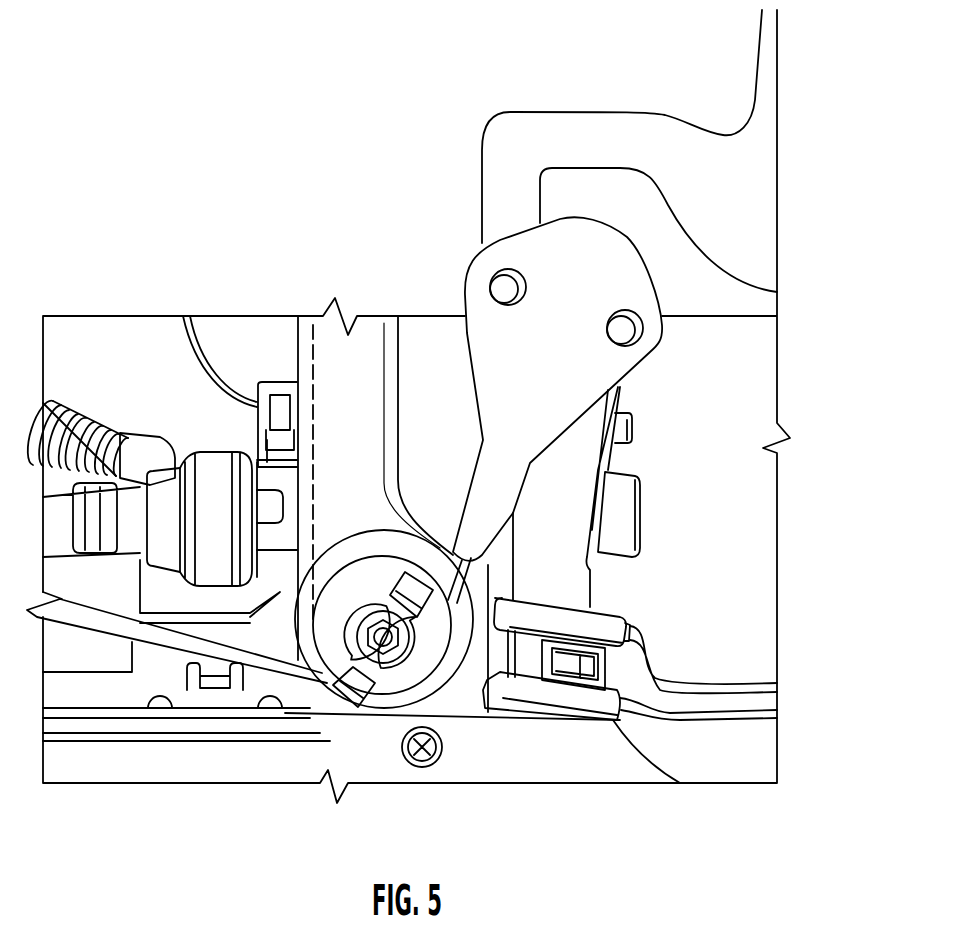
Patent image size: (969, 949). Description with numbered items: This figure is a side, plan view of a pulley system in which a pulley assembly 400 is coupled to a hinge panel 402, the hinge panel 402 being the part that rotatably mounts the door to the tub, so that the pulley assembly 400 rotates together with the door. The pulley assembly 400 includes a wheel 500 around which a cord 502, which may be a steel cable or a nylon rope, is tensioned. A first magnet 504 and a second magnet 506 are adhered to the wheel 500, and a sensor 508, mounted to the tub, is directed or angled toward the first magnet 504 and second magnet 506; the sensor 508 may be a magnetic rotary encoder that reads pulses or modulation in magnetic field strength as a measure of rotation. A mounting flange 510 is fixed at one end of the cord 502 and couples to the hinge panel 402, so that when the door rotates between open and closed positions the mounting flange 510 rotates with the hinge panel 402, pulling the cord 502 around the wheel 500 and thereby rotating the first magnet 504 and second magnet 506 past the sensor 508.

The pulley assembly 400 is at (267, 143).
The hinge panel 402 is at (660, 148).
The wheel 500 is at (423, 672).
The cord 502 is at (213, 648).
The first magnet 504 is at (352, 693).
The second magnet 506 is at (423, 613).
The sensor 508 is at (583, 700).
The mounting flange 510 is at (503, 327).